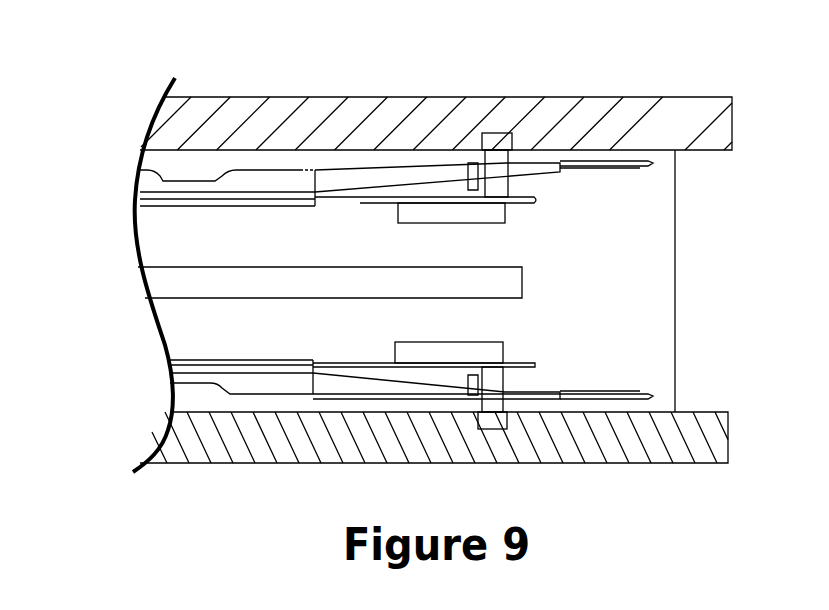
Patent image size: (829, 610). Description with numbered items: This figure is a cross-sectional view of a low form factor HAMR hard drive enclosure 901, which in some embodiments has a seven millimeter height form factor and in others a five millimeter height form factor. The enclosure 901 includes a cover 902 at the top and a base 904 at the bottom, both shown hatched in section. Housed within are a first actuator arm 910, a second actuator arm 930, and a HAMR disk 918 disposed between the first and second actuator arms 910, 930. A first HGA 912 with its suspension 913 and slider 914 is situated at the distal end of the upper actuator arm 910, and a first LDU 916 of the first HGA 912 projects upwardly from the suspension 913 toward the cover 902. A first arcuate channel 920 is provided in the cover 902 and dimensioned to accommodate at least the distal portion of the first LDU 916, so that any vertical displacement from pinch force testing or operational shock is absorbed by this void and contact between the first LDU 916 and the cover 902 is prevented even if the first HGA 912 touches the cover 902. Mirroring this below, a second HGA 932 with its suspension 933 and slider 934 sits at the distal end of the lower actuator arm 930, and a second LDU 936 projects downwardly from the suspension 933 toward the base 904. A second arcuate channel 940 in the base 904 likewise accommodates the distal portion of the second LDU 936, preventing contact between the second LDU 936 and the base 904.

The low form factor HAMR hard drive enclosure 901 is at (419, 264).
The cover 902 is at (298, 97).
The base 904 is at (620, 463).
The first actuator arm 910 is at (137, 170).
The first HGA 912 is at (409, 154).
The suspension 913 is at (522, 202).
The slider 914 is at (478, 224).
The first LDU 916 is at (530, 185).
The HAMR disk 918 is at (524, 285).
The first arcuate channel 920 is at (508, 133).
The second actuator arm 930 is at (180, 360).
The second HGA 932 is at (412, 403).
The suspension 933 is at (512, 362).
The slider 934 is at (460, 342).
The second LDU 936 is at (530, 376).
The second arcuate channel 940 is at (483, 430).